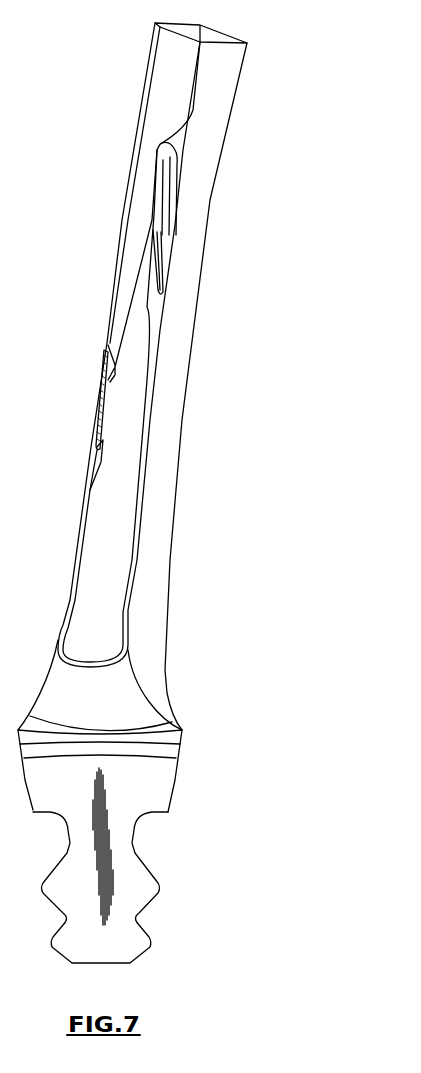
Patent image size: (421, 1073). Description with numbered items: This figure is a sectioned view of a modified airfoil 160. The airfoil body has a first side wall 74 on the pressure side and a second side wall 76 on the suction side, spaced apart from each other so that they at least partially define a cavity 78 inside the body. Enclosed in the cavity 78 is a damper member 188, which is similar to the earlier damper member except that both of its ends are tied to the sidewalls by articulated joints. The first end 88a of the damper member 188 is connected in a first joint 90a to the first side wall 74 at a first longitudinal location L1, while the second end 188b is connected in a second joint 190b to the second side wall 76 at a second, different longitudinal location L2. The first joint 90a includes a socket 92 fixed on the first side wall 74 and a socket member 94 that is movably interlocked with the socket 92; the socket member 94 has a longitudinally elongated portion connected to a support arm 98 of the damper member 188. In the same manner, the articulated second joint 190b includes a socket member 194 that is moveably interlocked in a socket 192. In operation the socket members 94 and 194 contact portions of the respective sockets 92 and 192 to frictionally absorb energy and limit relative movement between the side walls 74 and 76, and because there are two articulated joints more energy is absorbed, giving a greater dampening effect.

The second side wall 76 is at (130, 163).
The socket 92 is at (173, 148).
The socket member 94 is at (165, 205).
The first side wall 74 is at (195, 217).
The first longitudinal location L1 is at (252, 232).
The damper member 188 is at (130, 258).
The first end 88a is at (175, 235).
The first joint 90a is at (172, 270).
The support arm 98 is at (136, 324).
The socket 192 is at (104, 340).
The socket member 194 is at (97, 380).
The second longitudinal location L2 is at (80, 391).
The second end 188b is at (90, 401).
The second joint 190b is at (78, 432).
The cavity 78 is at (130, 475).
The airfoil 160 is at (205, 595).